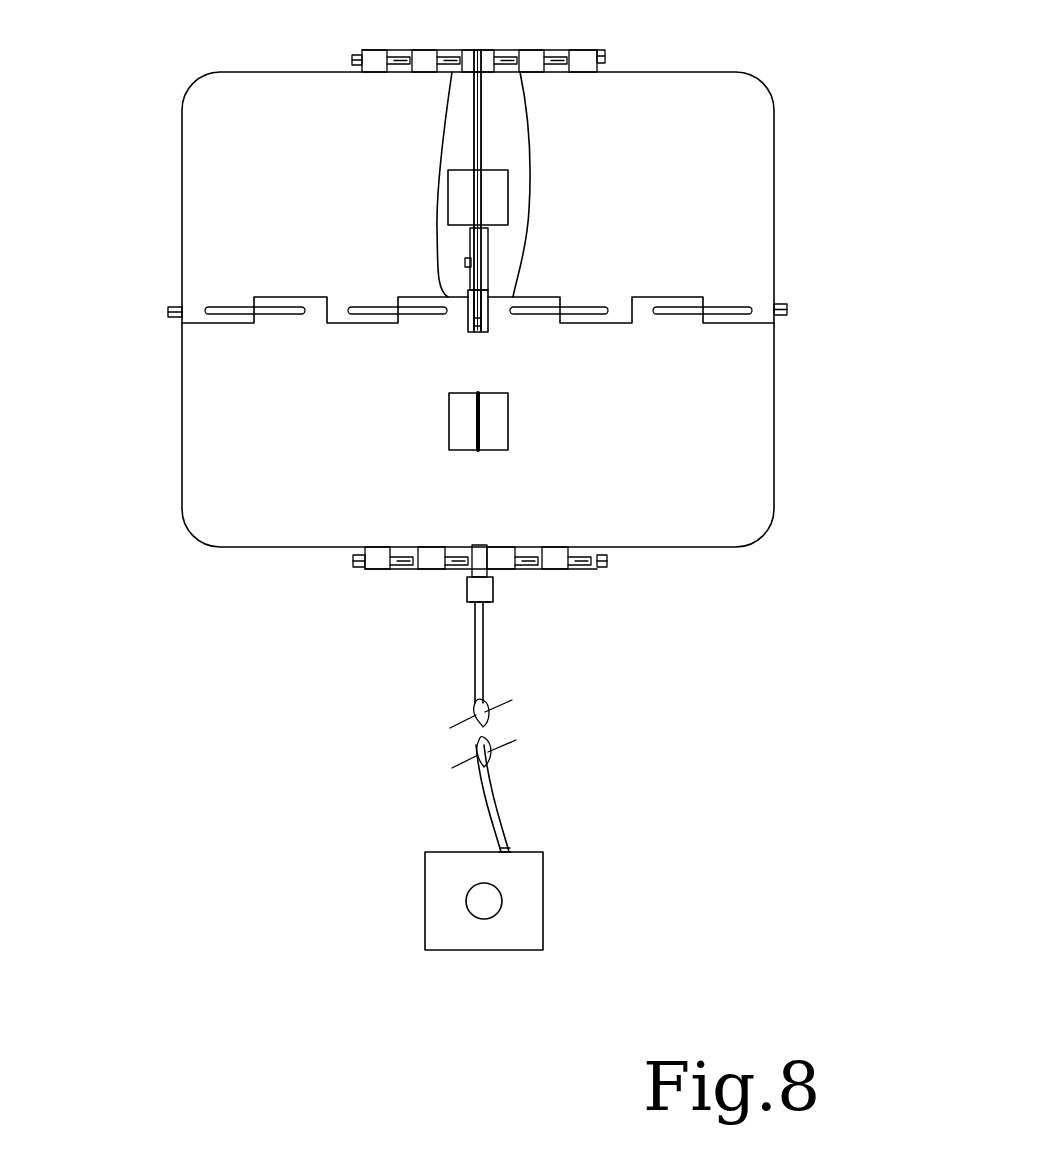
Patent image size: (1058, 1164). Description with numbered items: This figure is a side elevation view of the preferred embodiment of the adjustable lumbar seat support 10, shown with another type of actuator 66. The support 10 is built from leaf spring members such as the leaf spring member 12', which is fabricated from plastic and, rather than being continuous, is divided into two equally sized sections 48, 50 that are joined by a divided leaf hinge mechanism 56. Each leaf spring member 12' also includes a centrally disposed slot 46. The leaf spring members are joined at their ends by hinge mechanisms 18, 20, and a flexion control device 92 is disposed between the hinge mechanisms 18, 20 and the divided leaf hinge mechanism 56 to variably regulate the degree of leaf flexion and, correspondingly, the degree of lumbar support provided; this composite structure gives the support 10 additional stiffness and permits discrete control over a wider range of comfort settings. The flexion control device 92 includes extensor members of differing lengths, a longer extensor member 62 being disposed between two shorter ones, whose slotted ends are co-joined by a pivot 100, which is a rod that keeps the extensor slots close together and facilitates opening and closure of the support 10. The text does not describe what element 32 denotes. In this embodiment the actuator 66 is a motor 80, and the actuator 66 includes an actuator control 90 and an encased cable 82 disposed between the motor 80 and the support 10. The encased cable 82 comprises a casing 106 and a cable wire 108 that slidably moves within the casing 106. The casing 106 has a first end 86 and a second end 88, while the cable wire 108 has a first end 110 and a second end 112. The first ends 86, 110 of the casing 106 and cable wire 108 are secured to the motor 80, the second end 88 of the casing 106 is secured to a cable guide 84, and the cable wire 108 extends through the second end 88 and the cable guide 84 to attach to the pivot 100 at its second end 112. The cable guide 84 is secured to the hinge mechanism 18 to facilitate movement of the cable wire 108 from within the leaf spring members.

The adjustable lumbar seat support 10 is at (158, 242).
The leaf spring member 12' is at (542, 293).
The hinge mechanism 18 is at (602, 560).
The hinge mechanism 20 is at (605, 55).
The housing side wall 32 is at (814, 211).
The centrally disposed slot 46 is at (465, 193).
The section 48 is at (708, 163).
The section 50 is at (712, 448).
The divided leaf hinge mechanism 56 is at (788, 308).
The longer extensor member 62 is at (482, 118).
The actuator 66 is at (325, 757).
The motor 80 is at (533, 908).
The encased cable 82 is at (488, 671).
The cable guide 84 is at (487, 590).
The first end of the casing 86 is at (488, 260).
The second end of the casing 88 is at (472, 603).
The actuator control 90 is at (483, 900).
The flexion control device 92 is at (447, 267).
The pivot 100 is at (467, 262).
The casing 106 is at (503, 787).
The cable wire 108 is at (476, 425).
The first end of the cable wire 110 is at (473, 828).
The second end of the cable wire 112 is at (450, 336).